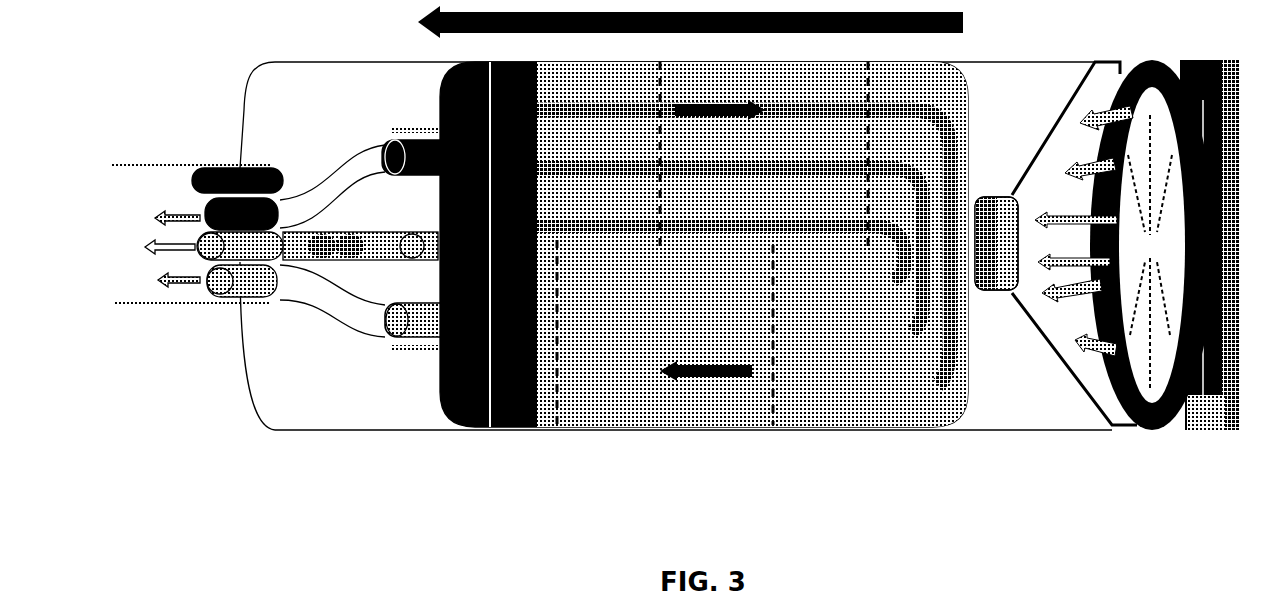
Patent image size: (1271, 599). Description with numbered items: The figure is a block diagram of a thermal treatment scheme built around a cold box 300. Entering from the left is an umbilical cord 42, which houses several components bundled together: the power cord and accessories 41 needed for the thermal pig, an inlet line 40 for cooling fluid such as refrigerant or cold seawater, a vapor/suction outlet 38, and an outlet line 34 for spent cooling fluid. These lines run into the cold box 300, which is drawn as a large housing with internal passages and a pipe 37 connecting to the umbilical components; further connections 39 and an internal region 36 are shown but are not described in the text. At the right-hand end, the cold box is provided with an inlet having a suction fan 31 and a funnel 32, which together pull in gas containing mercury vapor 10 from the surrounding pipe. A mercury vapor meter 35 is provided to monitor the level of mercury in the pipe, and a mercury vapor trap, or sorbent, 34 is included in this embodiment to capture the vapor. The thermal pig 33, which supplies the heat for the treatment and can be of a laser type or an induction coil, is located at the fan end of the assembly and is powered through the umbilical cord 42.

The gas containing mercury vapor 10 is at (1028, 170).
The suction fan 31 is at (989, 195).
The funnel 32 is at (1052, 368).
The thermal pig 33 is at (1160, 395).
The outlet line for spent cooling fluid 34 is at (1240, 317).
The mercury vapor meter 35 is at (1150, 252).
The heat exchanger core 36 is at (648, 403).
The coolant pipe 37 is at (342, 258).
The vapor/suction outlet 38 is at (242, 263).
The outlet port 39 is at (255, 290).
The inlet line 40 is at (277, 168).
The power cord and accessories 41 is at (241, 168).
The umbilical cord 42 is at (160, 306).
The cold box 300 is at (628, 443).